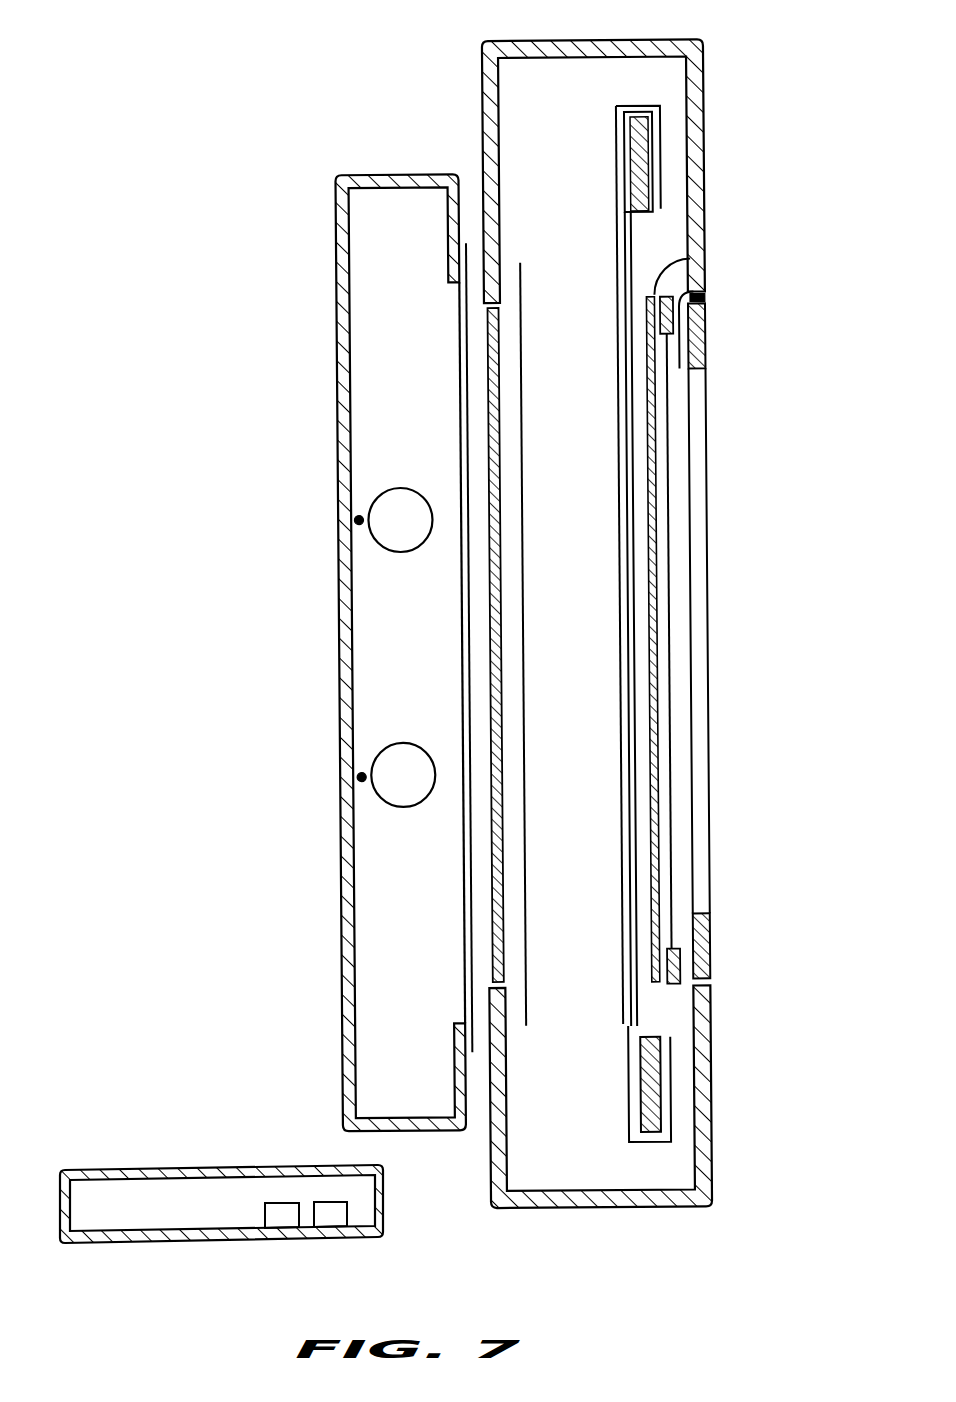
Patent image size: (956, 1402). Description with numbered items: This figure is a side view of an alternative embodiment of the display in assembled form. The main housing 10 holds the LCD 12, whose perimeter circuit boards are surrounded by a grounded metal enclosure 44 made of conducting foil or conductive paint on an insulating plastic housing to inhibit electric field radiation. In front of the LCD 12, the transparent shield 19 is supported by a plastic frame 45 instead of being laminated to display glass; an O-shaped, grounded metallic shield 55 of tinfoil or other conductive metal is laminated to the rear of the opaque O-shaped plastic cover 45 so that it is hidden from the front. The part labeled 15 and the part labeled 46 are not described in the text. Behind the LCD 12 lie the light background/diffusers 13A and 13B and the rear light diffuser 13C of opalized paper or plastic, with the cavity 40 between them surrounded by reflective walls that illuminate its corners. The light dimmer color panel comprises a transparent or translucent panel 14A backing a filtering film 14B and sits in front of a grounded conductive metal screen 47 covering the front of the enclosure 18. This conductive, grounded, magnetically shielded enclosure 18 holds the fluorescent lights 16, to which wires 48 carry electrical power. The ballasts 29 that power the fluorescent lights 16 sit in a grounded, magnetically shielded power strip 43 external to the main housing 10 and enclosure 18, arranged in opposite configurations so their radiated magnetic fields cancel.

The main housing 10 is at (663, 41).
The LCD 12 is at (648, 242).
The background/diffuser 13A is at (627, 240).
The light background/diffuser 13B is at (621, 243).
The rear light diffuser 13C is at (526, 266).
The transparent or translucent panel 14A is at (497, 398).
The filtering film 14B is at (491, 328).
The hinge portion 15 is at (696, 264).
The fluorescent lights 16 is at (385, 803).
The enclosure 18 is at (396, 174).
The transparent shield 19 is at (670, 573).
The ballasts 29 is at (268, 1203).
The cavity 40 is at (561, 253).
The power strip 43 is at (118, 1168).
The grounded metal enclosure 44 is at (664, 147).
The plastic frame 45 is at (696, 293).
The support block 46 is at (709, 340).
The metal screen 47 is at (463, 564).
The wires 48 is at (357, 777).
The metallic shield 55 is at (708, 298).